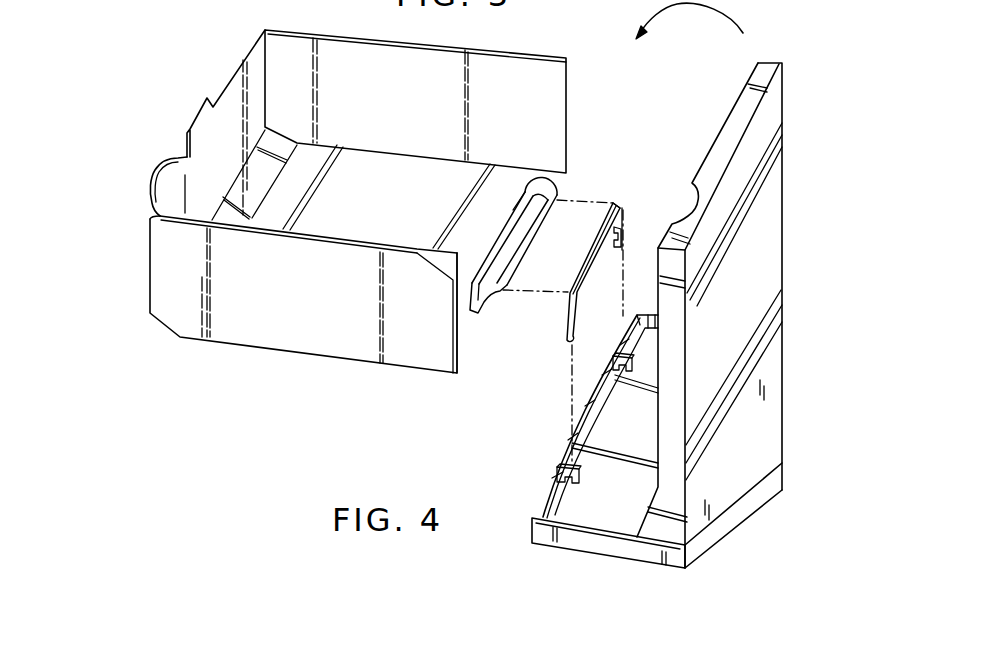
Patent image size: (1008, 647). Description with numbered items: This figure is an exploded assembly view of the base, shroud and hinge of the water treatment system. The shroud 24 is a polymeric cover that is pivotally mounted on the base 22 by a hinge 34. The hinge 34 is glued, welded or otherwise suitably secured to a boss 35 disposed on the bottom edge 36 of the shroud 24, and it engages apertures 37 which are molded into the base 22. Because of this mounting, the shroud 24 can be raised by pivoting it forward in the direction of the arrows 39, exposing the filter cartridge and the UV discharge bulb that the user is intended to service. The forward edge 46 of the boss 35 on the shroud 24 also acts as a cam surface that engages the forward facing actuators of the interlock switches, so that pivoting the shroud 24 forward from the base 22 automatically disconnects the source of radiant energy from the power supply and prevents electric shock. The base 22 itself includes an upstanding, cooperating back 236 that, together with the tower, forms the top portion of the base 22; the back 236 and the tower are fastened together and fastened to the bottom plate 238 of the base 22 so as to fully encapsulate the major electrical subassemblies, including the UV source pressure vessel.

The shroud 24 is at (358, 214).
The boss 35 is at (515, 205).
The forward edge 46 is at (544, 230).
The hinge 34 is at (620, 204).
The bottom edge 36 is at (481, 343).
The arrows 39 is at (712, 10).
The back 236 is at (758, 210).
The apertures 37 is at (578, 462).
The bottom plate 238 is at (560, 502).
The base 22 is at (580, 546).